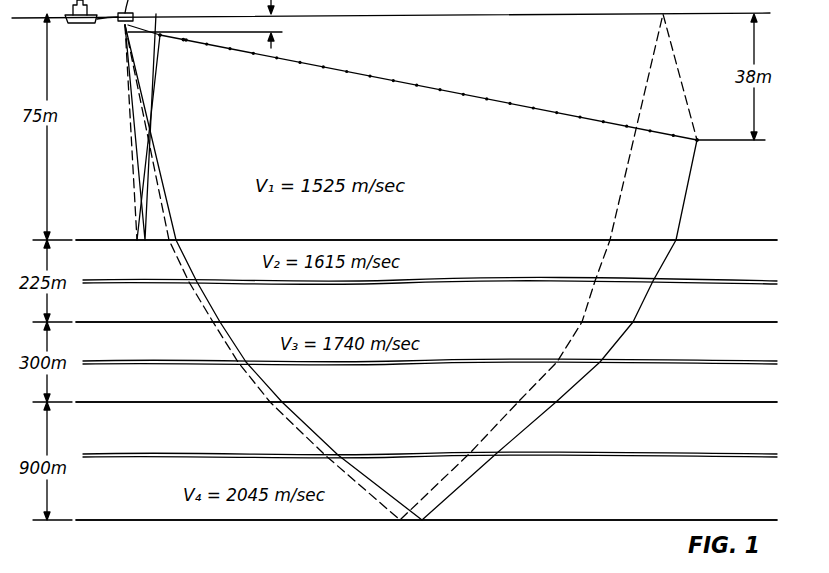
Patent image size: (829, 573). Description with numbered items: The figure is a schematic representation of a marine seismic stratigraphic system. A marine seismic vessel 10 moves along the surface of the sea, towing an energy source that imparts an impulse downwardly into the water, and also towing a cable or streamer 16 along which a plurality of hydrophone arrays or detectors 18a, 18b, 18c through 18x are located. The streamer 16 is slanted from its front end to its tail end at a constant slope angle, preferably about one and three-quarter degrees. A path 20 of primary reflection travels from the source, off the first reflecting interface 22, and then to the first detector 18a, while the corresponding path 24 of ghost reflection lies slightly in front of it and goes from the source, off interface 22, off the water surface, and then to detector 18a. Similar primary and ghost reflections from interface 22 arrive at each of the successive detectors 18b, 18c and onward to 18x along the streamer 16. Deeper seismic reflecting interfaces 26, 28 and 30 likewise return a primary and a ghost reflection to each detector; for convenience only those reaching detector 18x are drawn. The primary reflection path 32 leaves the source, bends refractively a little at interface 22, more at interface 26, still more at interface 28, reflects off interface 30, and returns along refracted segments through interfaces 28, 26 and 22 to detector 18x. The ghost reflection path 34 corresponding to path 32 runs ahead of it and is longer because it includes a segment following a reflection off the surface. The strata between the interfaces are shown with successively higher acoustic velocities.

The marine seismic vessel 10 is at (82, 23).
The cable or streamer 16 is at (425, 86).
The first detector 18a is at (161, 37).
The detector 18b is at (184, 41).
The detector 18c is at (187, 41).
The detector 18x is at (698, 142).
The path of primary reflection 20 is at (135, 137).
The reflecting interface 22 is at (498, 238).
The path of ghost reflection 24 is at (130, 106).
The interface 26 is at (507, 320).
The interface 28 is at (492, 400).
The interface 30 is at (533, 518).
The primary reflection path 32 is at (318, 432).
The ghost reflection path 34 is at (292, 425).